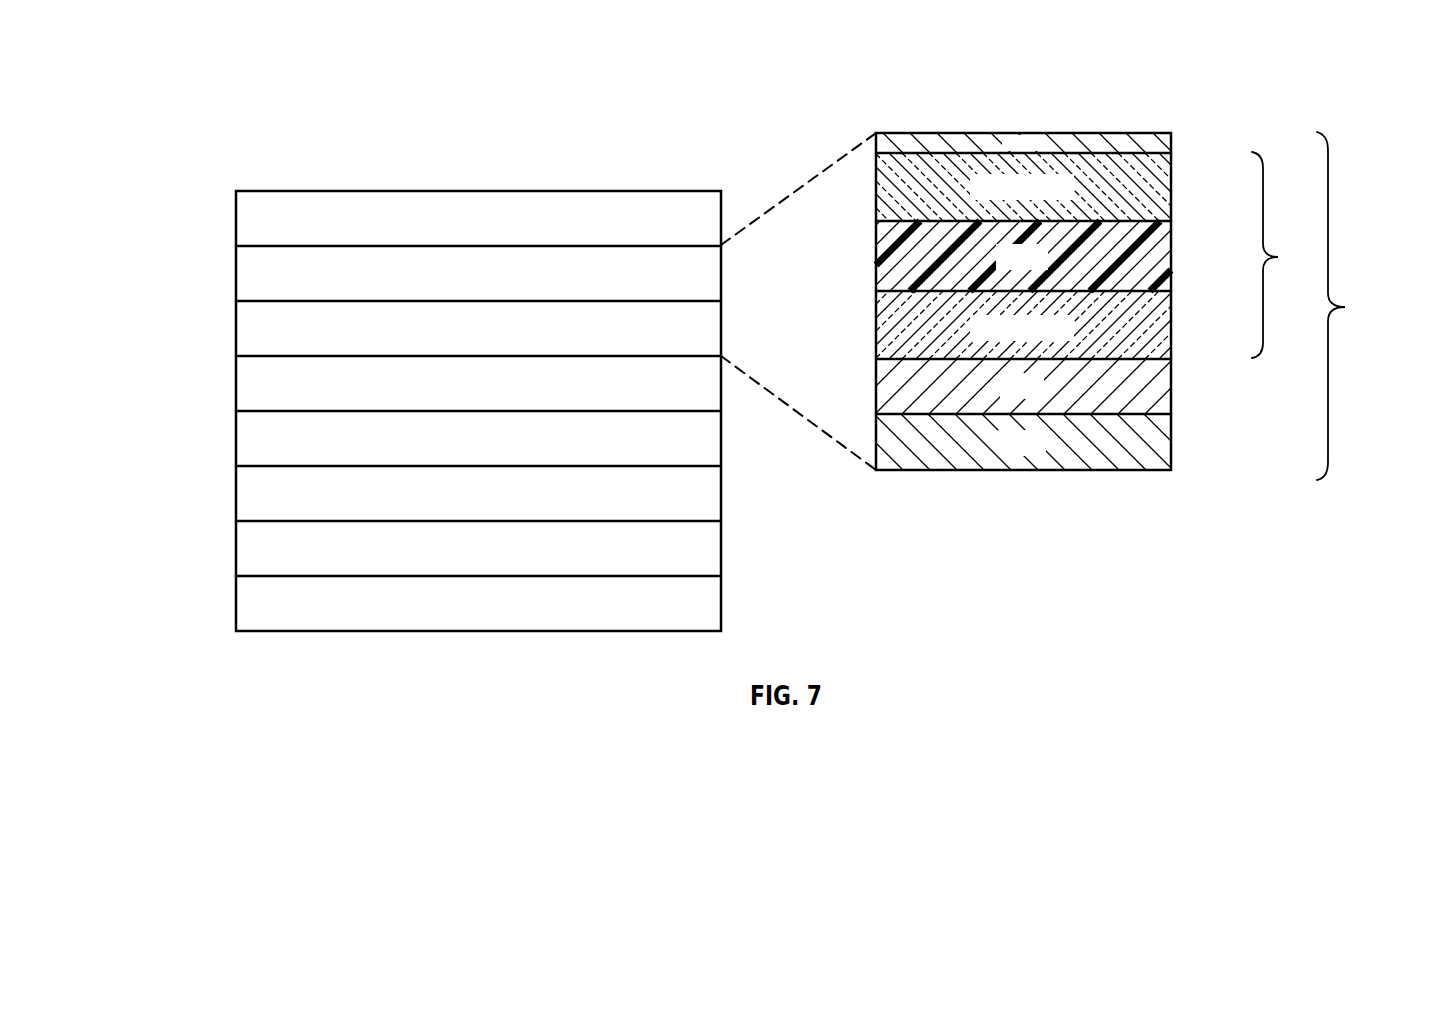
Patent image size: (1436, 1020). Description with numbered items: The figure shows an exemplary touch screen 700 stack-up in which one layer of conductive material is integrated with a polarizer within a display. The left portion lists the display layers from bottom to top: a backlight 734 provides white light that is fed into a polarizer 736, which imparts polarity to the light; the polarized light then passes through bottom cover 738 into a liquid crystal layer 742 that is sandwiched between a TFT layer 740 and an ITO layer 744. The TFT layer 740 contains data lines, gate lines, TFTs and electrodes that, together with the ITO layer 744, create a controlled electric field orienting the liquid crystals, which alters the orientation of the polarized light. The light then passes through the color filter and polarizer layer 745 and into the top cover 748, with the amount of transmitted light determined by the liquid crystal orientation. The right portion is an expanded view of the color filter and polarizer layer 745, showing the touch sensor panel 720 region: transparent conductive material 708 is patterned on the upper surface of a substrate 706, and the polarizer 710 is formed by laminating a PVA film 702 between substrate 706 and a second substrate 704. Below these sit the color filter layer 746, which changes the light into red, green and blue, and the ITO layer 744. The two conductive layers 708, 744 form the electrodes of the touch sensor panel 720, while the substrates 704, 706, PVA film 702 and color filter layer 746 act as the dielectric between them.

The touch screen 700 is at (231, 58).
The top cover 748 is at (236, 218).
The color filter and polarizer layer 745 is at (236, 273).
The ITO layer 744 is at (236, 328).
The liquid crystal layer 742 is at (236, 383).
The TFT layer 740 is at (236, 438).
The bottom cover 738 is at (236, 493).
The polarizer 736 is at (236, 548).
The backlight 734 is at (236, 603).
The transparent conductive material 708 is at (1171, 143).
The substrate 706 is at (1171, 187).
The PVA film 702 is at (1171, 257).
The substrate 704 is at (1171, 323).
The color filter layer 746 is at (1171, 387).
The polarizer 710 is at (1285, 255).
The touch sensor panel 720 is at (1361, 306).